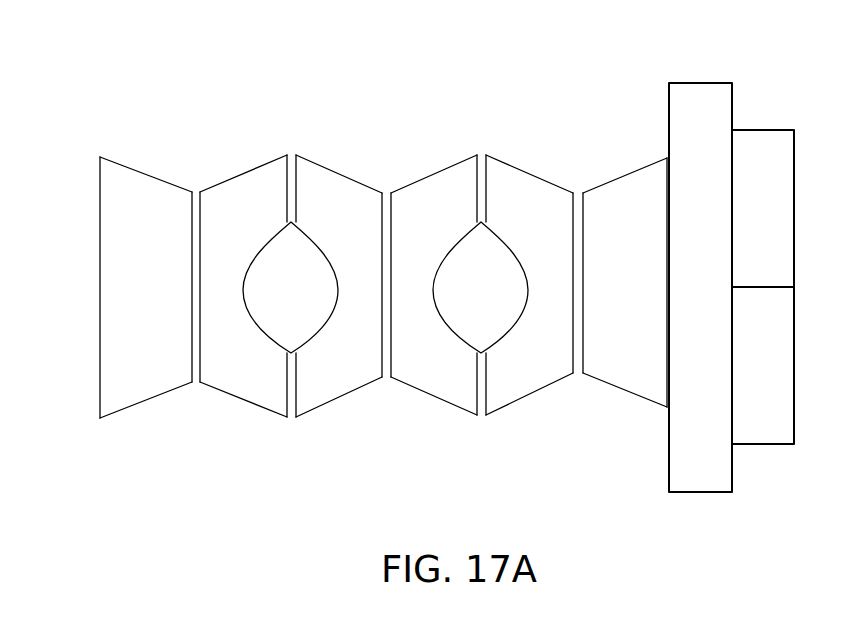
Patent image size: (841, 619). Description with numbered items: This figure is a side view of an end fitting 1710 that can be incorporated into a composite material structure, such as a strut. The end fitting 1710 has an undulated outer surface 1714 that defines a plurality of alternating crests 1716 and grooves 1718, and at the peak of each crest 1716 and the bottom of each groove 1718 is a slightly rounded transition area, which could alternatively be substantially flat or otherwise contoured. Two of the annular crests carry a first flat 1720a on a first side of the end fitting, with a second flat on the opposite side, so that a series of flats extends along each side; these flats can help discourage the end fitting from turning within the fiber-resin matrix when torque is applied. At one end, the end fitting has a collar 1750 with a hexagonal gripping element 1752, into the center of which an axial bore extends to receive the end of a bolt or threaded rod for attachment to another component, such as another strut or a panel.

The end fitting 1710 is at (490, 84).
The undulated outer surface 1714 is at (342, 420).
The crest 1716 is at (100, 157).
The groove 1718 is at (195, 391).
The first flat 1720a is at (283, 297).
The collar 1750 is at (715, 520).
The hexagonal gripping element 1752 is at (764, 422).